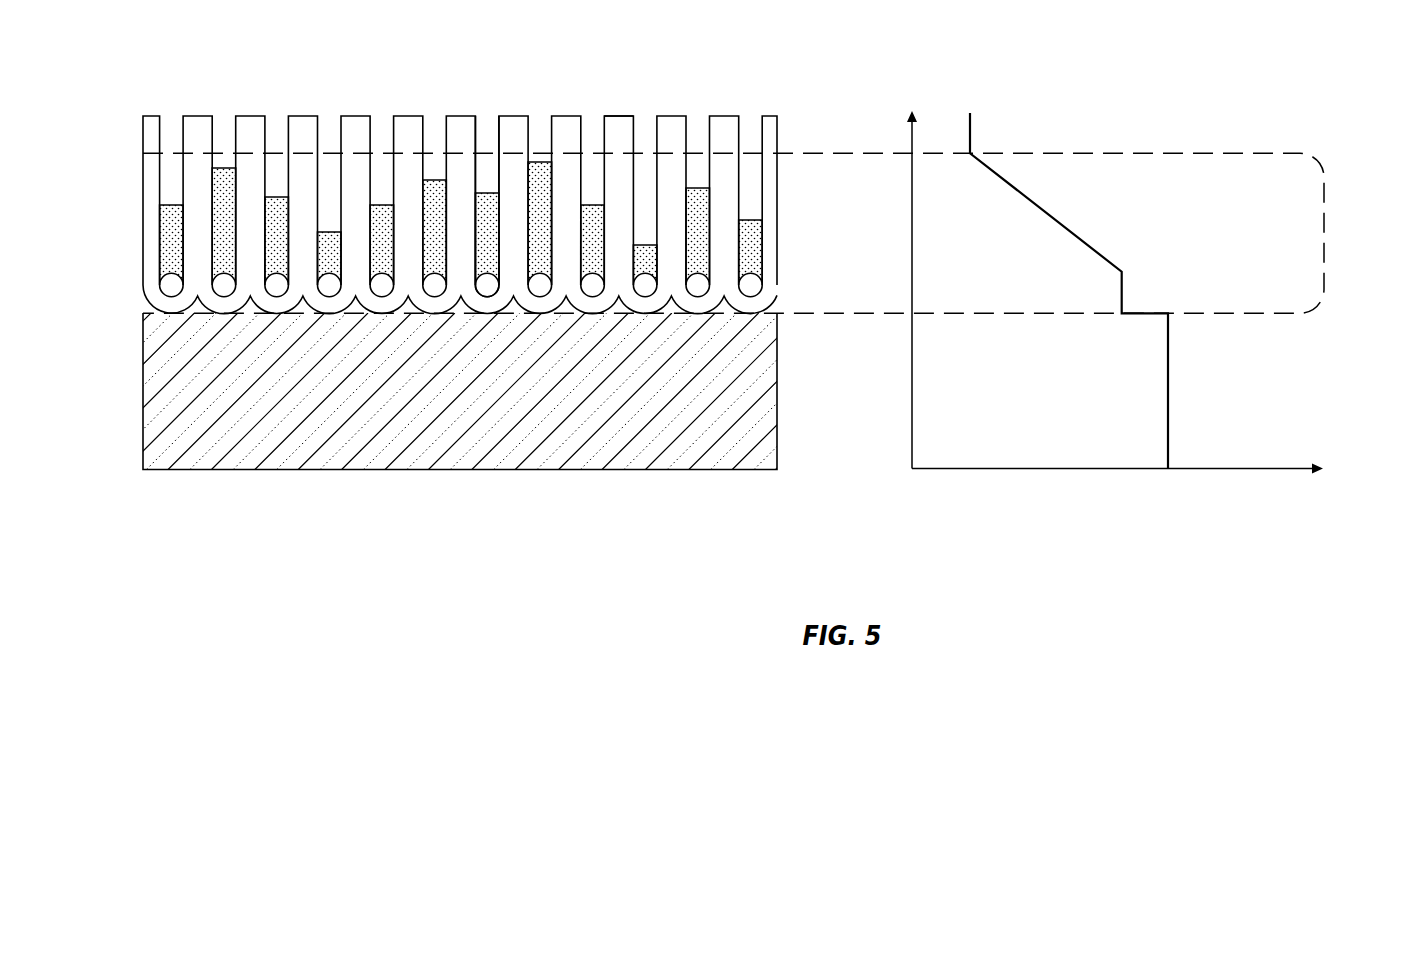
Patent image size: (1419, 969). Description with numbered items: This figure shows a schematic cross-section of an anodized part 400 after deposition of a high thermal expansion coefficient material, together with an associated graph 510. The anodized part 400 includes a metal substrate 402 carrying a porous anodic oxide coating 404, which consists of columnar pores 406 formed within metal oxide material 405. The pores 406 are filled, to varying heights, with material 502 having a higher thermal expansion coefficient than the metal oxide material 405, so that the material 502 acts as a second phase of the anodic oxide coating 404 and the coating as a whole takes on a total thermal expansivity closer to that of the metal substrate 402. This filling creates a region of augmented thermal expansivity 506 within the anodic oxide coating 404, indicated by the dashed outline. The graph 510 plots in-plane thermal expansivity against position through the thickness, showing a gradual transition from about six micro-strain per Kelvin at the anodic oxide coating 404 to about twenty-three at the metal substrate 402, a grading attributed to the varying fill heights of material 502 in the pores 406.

The anodized part 400 is at (196, 53).
The metal substrate 402 is at (777, 385).
The anodic oxide coating 404 is at (777, 203).
The metal oxide material 405 is at (613, 114).
The pores 406 is at (488, 113).
The material having a high thermal expansion coefficient 502 is at (697, 187).
The region of augmented thermal expansivity 506 is at (1324, 228).
The graph 510 is at (968, 53).